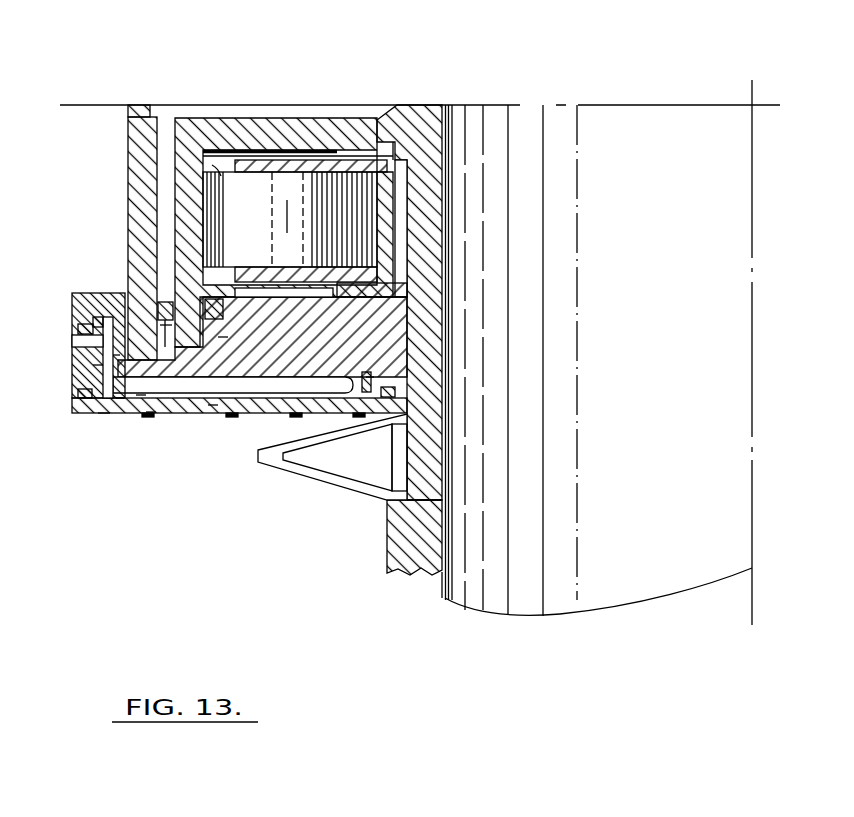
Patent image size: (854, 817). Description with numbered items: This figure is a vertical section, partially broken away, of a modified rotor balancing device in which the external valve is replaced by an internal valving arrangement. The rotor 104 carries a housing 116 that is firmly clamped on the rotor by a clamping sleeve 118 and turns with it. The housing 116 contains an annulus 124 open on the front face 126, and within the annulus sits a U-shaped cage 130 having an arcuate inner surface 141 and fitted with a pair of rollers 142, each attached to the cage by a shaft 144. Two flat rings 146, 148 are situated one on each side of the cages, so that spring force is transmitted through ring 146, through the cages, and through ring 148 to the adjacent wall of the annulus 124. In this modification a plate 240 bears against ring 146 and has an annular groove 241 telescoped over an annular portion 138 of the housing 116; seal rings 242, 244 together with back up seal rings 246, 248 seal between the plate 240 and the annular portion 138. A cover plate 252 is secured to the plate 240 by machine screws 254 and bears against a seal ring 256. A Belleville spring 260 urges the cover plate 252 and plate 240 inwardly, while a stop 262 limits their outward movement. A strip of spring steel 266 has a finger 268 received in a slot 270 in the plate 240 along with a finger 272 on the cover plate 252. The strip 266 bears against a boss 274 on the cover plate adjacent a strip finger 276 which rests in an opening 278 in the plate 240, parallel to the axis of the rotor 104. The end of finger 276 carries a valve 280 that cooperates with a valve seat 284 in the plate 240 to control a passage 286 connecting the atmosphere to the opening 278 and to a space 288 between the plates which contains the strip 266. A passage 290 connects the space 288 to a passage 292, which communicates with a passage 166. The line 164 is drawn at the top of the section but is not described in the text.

The rotor 104 is at (638, 345).
The housing 116 is at (432, 207).
The clamping sleeve 118 is at (403, 547).
The annulus 124 is at (295, 221).
The front face 126 is at (432, 501).
The cage 130 is at (293, 140).
The annular portion 138 is at (237, 411).
The arcuate inner surface 141 is at (396, 243).
The roller 142 is at (267, 243).
The shaft 144 is at (293, 207).
The flat ring 146 is at (384, 286).
The flat ring 148 is at (372, 146).
The reference line 164 is at (247, 104).
The passage 166 is at (160, 185).
The plate 240 is at (336, 328).
The annular groove 241 is at (120, 355).
The seal ring 242 is at (135, 305).
The seal ring 244 is at (222, 337).
The back up seal ring 246 is at (160, 300).
The back up seal ring 248 is at (214, 318).
The cover plate 252 is at (213, 405).
The machine screw 254 is at (150, 412).
The seal ring 256 is at (78, 392).
The Belleville spring 260 is at (285, 465).
The stop 262 is at (398, 462).
The strip of spring steel 266 is at (249, 378).
The finger 268 is at (364, 371).
The slot 270 is at (371, 377).
The finger 272 is at (386, 391).
The boss 274 is at (140, 395).
The strip finger 276 is at (103, 411).
The opening 278 is at (93, 365).
The valve 280 is at (103, 303).
The valve seat 284 is at (97, 333).
The passage 286 is at (92, 314).
The space 288 is at (295, 383).
The passage 290 is at (120, 408).
The passage 292 is at (158, 355).